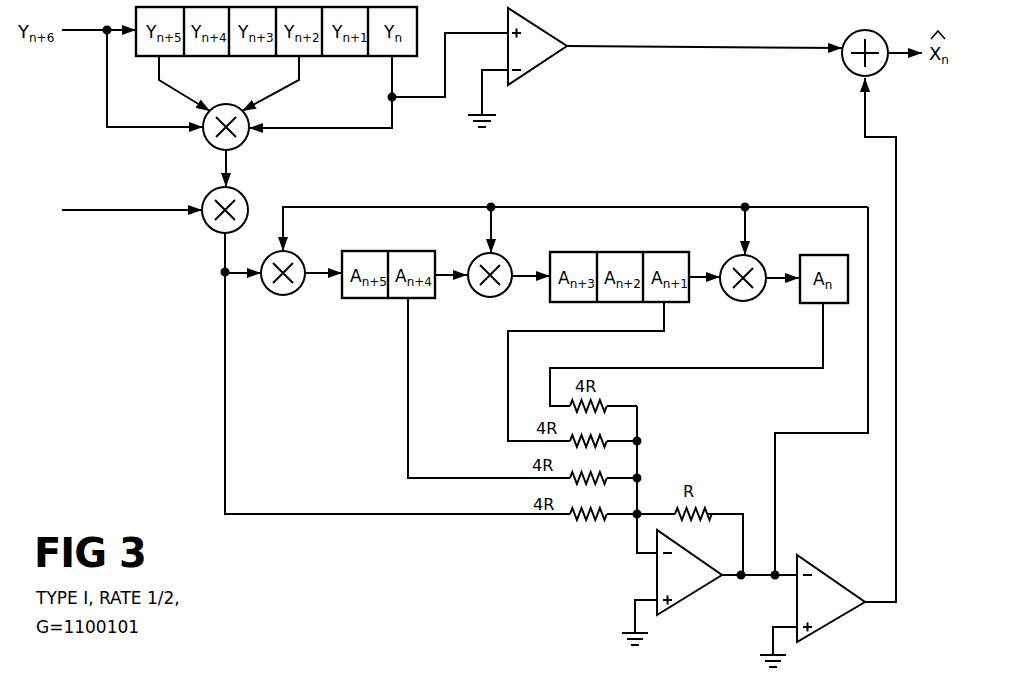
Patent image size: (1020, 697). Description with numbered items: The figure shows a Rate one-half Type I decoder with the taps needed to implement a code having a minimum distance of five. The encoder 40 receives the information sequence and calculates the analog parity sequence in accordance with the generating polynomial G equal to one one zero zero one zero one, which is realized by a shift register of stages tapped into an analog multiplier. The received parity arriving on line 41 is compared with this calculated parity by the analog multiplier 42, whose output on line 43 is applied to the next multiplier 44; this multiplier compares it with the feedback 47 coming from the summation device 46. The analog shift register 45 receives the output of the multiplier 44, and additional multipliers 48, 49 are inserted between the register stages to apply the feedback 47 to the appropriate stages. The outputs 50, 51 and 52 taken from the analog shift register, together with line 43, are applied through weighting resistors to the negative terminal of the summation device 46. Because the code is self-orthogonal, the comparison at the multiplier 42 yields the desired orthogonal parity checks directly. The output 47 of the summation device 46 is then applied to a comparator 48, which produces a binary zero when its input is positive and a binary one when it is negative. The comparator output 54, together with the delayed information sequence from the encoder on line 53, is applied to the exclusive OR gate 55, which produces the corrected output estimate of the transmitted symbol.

The encoder 40 is at (107, 106).
The received parity line 41 is at (95, 210).
The analog multiplier 42 is at (209, 193).
The multiplier output line 43 is at (223, 354).
The multiplier 44 is at (276, 297).
The analog shift register 45 is at (518, 185).
The summation device 46 is at (686, 598).
The feedback 47 is at (865, 390).
The multiplier / comparator 48 is at (481, 299).
The multiplier 49 is at (732, 300).
The shift register output 50 is at (405, 378).
The shift register output 51 is at (508, 395).
The shift register output 52 is at (550, 397).
The delayed information line 53 is at (680, 50).
The comparator output 54 is at (903, 248).
The exclusive OR gate 55 is at (846, 64).